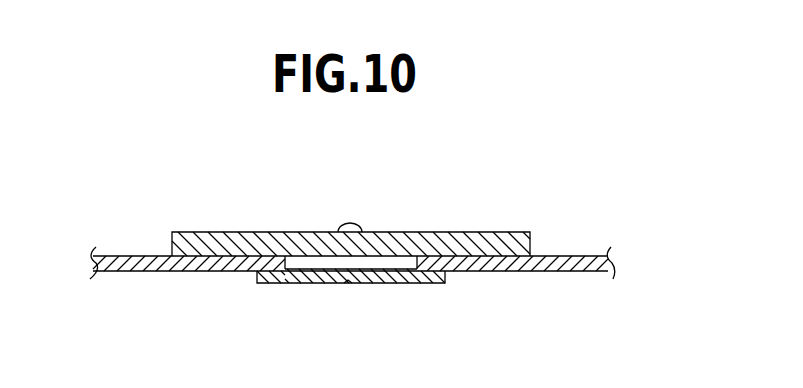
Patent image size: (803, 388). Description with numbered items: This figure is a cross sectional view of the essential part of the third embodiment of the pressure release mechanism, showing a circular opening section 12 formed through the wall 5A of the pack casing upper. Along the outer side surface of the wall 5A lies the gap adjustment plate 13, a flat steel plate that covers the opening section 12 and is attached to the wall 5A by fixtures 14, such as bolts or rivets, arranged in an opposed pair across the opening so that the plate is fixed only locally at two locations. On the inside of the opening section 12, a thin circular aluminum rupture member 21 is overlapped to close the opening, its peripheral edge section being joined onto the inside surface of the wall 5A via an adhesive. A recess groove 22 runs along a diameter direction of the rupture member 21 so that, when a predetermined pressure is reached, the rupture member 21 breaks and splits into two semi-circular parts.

The wall 5A is at (578, 256).
The gap adjustment plate 13 is at (480, 231).
The fixture 14 is at (343, 225).
The rupture member 21 is at (418, 284).
The opening section 12 is at (318, 265).
The recess groove 22 is at (348, 284).